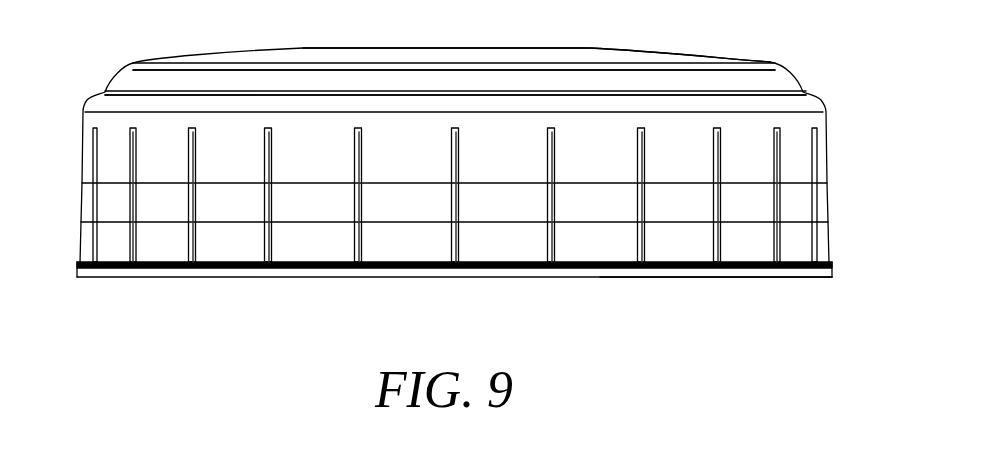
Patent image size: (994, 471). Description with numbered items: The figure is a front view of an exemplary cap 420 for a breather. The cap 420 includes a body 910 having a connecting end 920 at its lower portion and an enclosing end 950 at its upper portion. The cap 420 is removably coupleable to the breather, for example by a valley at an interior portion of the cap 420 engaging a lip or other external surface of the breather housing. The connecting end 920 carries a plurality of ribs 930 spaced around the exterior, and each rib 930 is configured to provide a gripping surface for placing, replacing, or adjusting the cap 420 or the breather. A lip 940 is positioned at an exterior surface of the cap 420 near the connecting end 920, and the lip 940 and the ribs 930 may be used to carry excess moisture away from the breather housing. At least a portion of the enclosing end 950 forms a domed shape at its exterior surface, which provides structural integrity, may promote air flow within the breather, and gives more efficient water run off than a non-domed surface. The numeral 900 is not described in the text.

The cap 420 is at (138, 318).
The cap body 900 is at (667, 253).
The body 910 is at (730, 58).
The connecting end 920 is at (778, 277).
The rib 930 is at (455, 270).
The lip 940 is at (525, 270).
The enclosing end 950 is at (503, 140).